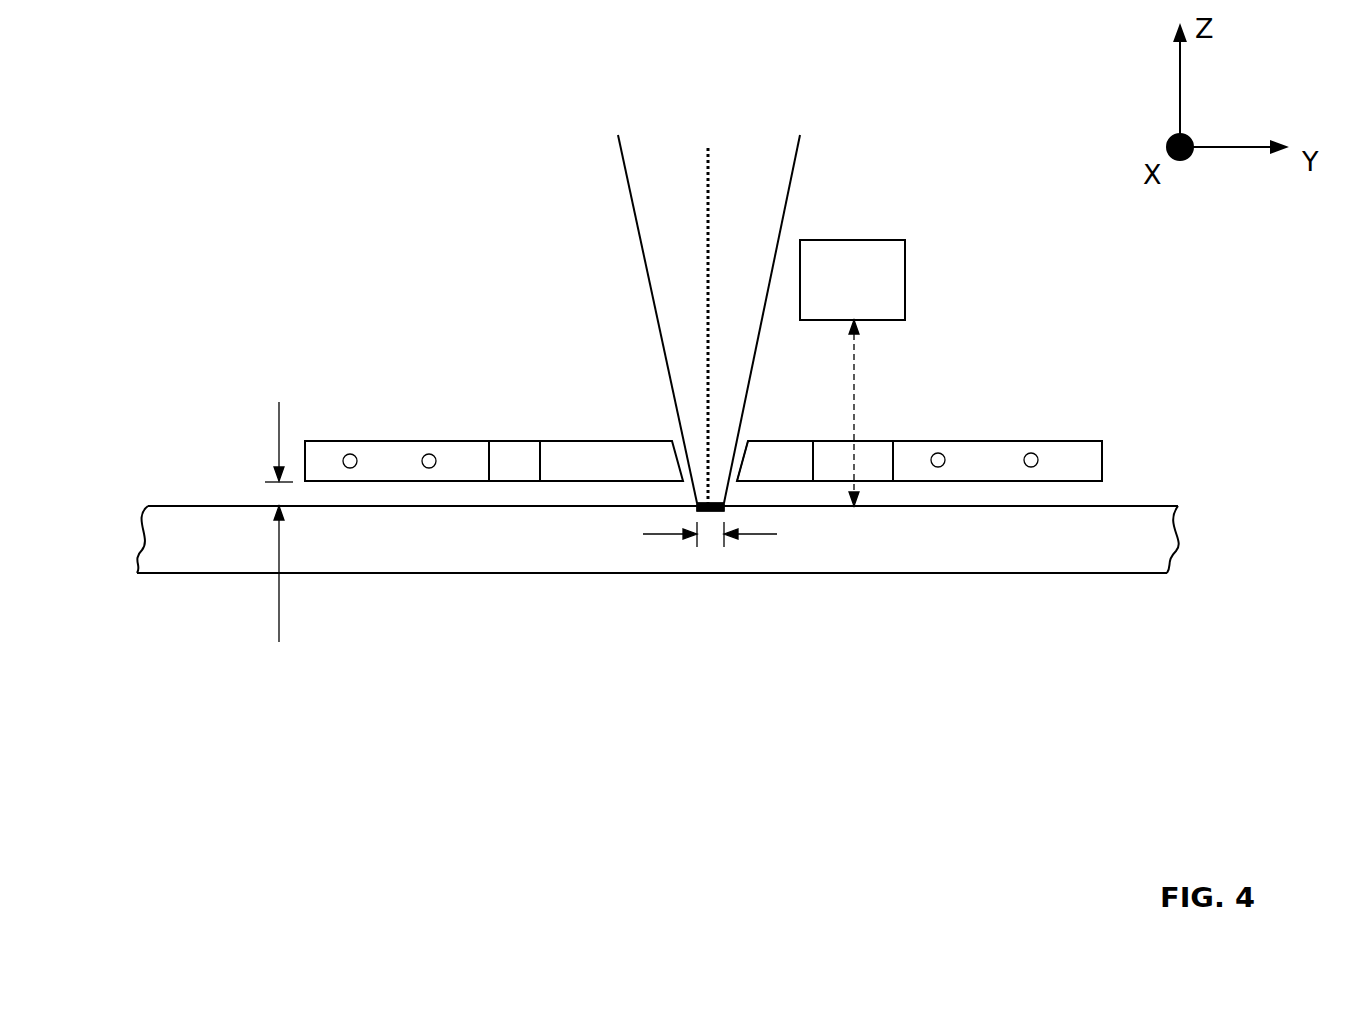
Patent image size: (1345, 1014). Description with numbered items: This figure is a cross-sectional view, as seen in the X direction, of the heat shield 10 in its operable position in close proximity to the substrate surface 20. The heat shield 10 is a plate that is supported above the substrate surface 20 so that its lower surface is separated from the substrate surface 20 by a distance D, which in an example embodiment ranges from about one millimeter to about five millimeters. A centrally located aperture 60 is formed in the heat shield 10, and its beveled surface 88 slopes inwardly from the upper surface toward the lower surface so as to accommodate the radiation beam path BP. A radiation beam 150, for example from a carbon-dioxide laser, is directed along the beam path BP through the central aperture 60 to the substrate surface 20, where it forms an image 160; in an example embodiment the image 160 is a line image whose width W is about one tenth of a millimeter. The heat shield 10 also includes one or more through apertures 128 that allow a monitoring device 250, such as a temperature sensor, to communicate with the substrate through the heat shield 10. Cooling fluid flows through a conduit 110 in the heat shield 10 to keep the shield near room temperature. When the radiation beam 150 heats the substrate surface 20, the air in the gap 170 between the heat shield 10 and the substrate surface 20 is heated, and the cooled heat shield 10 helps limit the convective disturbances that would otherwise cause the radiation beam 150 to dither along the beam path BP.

The heat shield 10 is at (1122, 408).
The substrate surface 20 is at (1160, 504).
The aperture 60 is at (660, 417).
The beveled surface 88 is at (748, 455).
The conduit 110 is at (427, 454).
The through apertures 128 is at (520, 455).
The radiation beam 150 is at (628, 177).
The image 160 is at (724, 508).
The gap 170 is at (1122, 491).
The monitoring device 250 is at (852, 373).
The beam path BP is at (710, 200).
The width W is at (711, 560).
The distance D is at (252, 496).